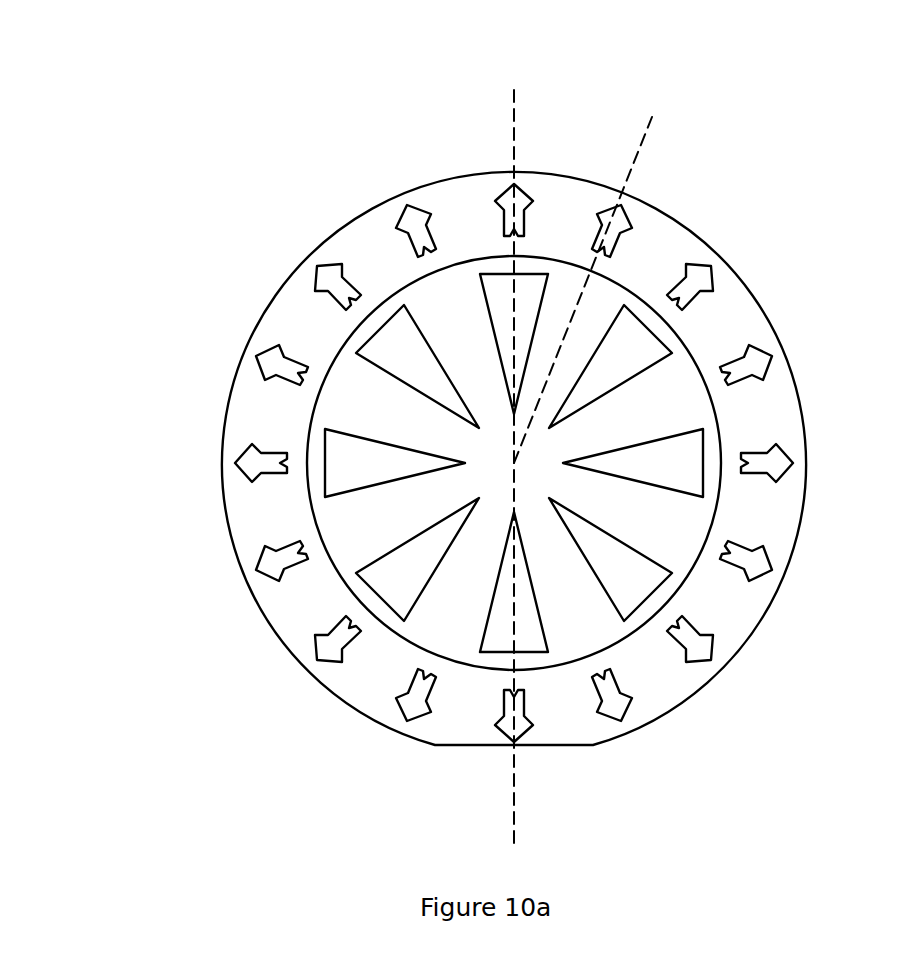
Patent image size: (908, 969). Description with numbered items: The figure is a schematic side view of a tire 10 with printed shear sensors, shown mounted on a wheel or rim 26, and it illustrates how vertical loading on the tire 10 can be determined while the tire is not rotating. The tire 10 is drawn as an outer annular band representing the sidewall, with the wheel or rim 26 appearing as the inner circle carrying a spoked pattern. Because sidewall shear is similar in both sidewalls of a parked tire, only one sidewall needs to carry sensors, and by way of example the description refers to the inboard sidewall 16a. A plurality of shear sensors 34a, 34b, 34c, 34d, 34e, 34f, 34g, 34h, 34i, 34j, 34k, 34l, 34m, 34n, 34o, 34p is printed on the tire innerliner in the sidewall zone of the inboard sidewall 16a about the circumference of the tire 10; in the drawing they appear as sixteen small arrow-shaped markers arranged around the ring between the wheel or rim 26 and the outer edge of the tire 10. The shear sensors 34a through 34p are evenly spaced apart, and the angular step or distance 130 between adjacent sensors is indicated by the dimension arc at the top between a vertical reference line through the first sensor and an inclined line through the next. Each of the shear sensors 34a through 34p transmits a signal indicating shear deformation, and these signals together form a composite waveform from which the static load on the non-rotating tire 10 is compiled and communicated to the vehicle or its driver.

The tire 10 is at (753, 157).
The inboard sidewall 16a is at (777, 410).
The wheel or rim 26 is at (677, 377).
The angular step or distance 130 is at (514, 110).
The shear sensor 34a is at (526, 190).
The shear sensor 34b is at (632, 203).
The shear sensor 34c is at (718, 264).
The shear sensor 34d is at (782, 356).
The shear sensor 34e is at (795, 461).
The shear sensor 34f is at (772, 562).
The shear sensor 34g is at (737, 640).
The shear sensor 34h is at (622, 716).
The shear sensor 34i is at (532, 728).
The shear sensor 34j is at (408, 724).
The shear sensor 34k is at (313, 663).
The shear sensor 34l is at (255, 567).
The shear sensor 34m is at (237, 461).
The shear sensor 34n is at (258, 356).
The shear sensor 34o is at (317, 264).
The shear sensor 34p is at (413, 207).